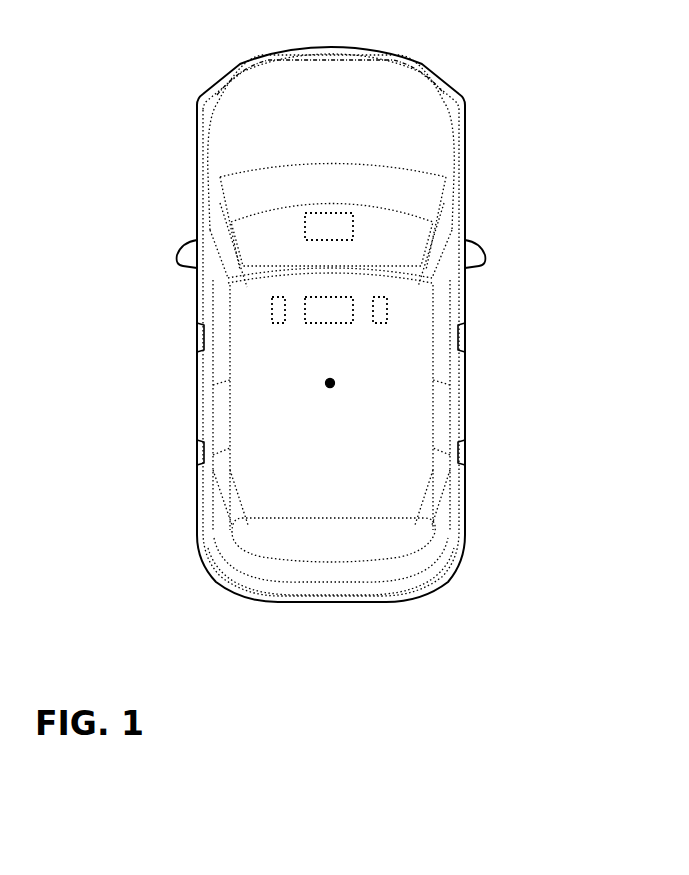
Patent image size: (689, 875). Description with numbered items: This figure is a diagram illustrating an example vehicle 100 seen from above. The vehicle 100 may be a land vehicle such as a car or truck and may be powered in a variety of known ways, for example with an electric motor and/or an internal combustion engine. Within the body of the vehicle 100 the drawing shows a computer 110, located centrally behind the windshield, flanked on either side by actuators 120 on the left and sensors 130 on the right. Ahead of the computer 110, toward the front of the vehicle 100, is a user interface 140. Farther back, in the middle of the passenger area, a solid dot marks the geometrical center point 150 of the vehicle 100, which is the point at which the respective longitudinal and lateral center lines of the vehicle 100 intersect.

The vehicle 100 is at (331, 324).
The computer 110 is at (328, 295).
The actuator 120 is at (270, 310).
The sensor 130 is at (388, 303).
The user interface 140 is at (356, 220).
The geometrical center point 150 is at (325, 387).